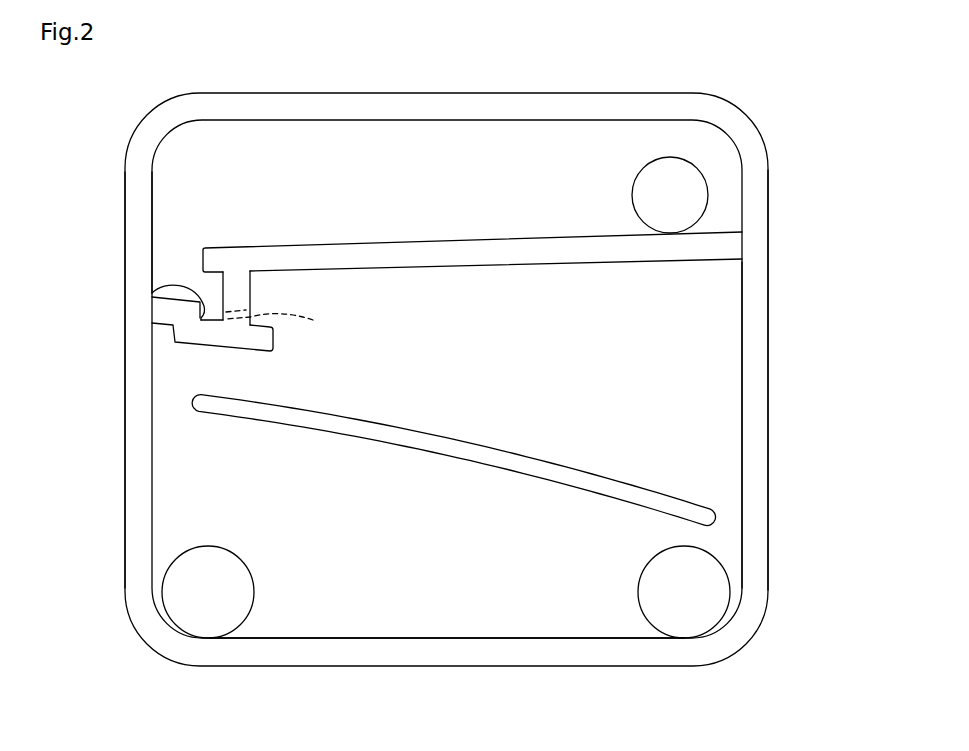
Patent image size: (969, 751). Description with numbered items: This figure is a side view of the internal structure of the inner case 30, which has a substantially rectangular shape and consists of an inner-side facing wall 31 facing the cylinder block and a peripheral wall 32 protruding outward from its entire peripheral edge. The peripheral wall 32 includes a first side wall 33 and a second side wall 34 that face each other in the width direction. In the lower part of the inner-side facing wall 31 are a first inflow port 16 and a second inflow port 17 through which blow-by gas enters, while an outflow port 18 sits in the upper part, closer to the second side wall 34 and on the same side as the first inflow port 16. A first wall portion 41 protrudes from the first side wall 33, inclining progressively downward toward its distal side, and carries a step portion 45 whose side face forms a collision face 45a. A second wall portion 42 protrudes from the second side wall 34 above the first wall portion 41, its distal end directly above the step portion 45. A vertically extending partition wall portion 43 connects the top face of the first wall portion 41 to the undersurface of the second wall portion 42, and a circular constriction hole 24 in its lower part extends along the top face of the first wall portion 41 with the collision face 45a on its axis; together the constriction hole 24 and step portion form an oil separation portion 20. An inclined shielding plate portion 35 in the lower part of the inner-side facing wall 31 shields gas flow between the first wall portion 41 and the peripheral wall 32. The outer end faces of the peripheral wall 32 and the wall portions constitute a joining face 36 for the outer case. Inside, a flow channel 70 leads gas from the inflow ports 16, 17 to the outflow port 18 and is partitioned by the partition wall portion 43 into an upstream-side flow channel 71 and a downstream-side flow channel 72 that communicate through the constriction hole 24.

The inner case 30 is at (778, 118).
The inner-side facing wall 31 is at (435, 638).
The peripheral wall 32 is at (768, 370).
The first side wall 33 is at (152, 184).
The second side wall 34 is at (742, 318).
The shielding plate portion 35 is at (405, 448).
The joining face 36 is at (125, 366).
The first inflow port 16 is at (638, 593).
The second inflow port 17 is at (210, 547).
The outflow port 18 is at (634, 195).
The oil separation portion 20 is at (447, 292).
The first wall portion 41 is at (232, 353).
The second wall portion 42 is at (458, 240).
The partition wall portion 43 is at (254, 284).
The constriction hole 24 is at (284, 323).
The step portion 45 is at (208, 312).
The collision face 45a is at (152, 293).
The flow channel 70 is at (713, 448).
The upstream-side flow channel 71 is at (178, 443).
The downstream-side flow channel 72 is at (618, 145).